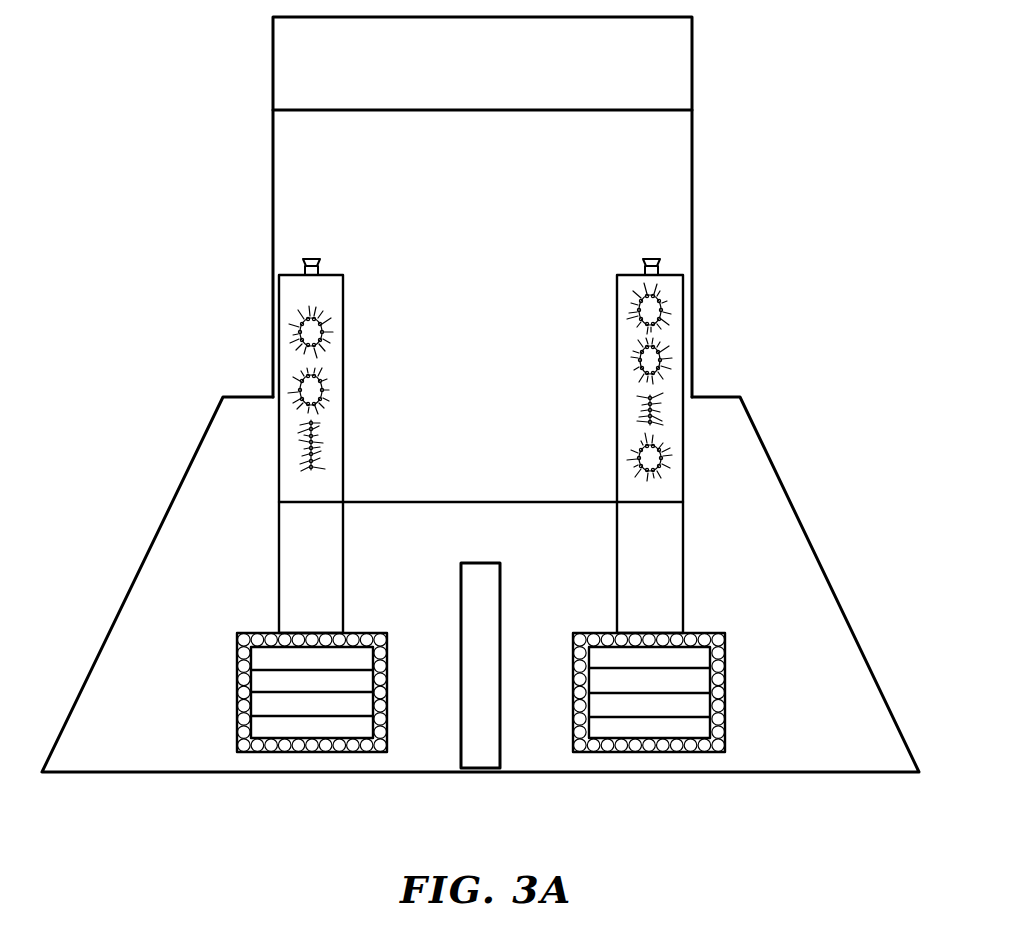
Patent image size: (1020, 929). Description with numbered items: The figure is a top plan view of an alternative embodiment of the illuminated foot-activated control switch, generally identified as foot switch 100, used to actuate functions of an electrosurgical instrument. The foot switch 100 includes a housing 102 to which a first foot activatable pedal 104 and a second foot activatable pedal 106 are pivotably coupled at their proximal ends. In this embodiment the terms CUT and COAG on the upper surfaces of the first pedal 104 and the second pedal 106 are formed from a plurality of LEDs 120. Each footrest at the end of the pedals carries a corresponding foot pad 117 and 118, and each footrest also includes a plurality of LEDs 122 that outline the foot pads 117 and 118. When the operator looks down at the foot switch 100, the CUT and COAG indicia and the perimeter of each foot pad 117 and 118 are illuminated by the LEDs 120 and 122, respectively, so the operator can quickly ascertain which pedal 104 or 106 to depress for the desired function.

The foot switch 100 is at (160, 213).
The housing 102 is at (666, 184).
The first foot activatable pedal 104 is at (298, 566).
The second foot activatable pedal 106 is at (660, 563).
The foot pad 117 is at (330, 735).
The foot pad 118 is at (688, 730).
The LEDs 120 is at (302, 334).
The LEDs 122 is at (258, 752).